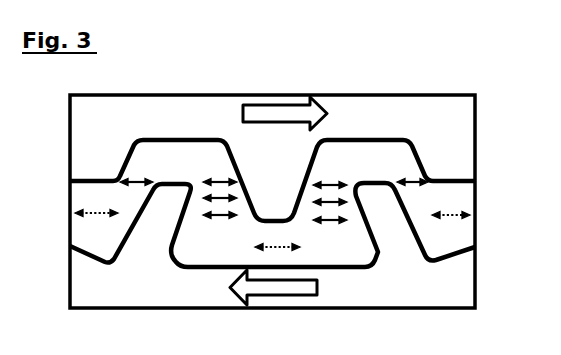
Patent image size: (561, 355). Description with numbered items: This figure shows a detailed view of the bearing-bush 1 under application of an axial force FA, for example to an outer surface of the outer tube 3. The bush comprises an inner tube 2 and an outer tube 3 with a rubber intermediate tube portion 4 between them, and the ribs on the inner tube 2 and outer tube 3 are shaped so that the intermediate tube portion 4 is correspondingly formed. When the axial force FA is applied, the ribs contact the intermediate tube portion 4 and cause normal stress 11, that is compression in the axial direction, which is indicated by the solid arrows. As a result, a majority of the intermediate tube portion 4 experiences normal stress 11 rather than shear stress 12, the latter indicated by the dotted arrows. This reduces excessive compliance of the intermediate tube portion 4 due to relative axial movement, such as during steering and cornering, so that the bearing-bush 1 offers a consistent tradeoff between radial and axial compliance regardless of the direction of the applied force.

The bearing-bush 1 is at (57, 134).
The inner tube 2 is at (452, 291).
The outer tube 3 is at (405, 103).
The intermediate tube portion 4 is at (450, 245).
The normal stress 11 is at (223, 180).
The shear stress 12 is at (93, 211).
The axial force FA is at (290, 93).